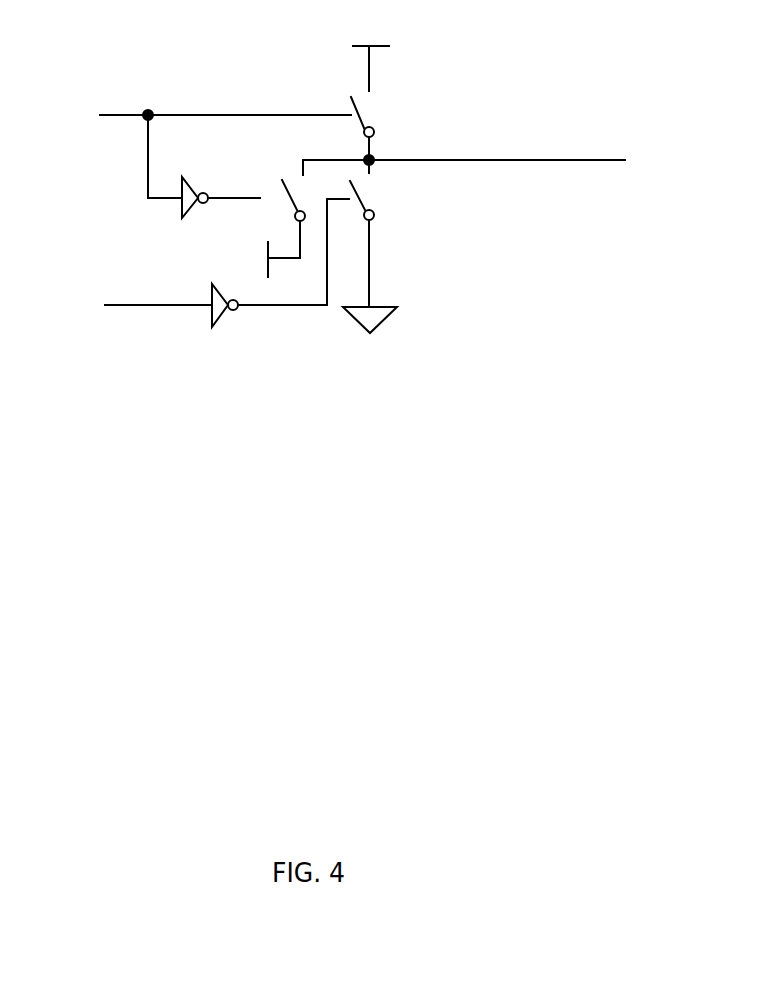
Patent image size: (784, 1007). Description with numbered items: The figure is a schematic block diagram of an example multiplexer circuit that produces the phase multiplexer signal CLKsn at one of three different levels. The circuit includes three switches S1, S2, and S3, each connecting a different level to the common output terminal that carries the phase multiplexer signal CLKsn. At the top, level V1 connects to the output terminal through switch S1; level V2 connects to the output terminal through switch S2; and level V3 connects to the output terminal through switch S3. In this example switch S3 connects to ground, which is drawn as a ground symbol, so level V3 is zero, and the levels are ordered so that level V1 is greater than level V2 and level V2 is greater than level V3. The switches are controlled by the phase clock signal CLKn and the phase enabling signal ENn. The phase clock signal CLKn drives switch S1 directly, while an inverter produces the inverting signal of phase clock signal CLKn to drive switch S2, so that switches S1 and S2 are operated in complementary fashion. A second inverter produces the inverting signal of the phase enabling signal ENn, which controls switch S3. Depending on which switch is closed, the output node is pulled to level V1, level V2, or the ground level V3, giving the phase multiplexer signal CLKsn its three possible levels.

The phase clock signal CLKn is at (186, 151).
The phase multiplexer signal CLKsn is at (505, 156).
The phase enabling signal ENn is at (142, 305).
The switch S1 is at (377, 128).
The switch S2 is at (286, 204).
The switch S3 is at (321, 233).
The level V1 is at (371, 49).
The level V2 is at (250, 259).
The level V3 is at (385, 320).